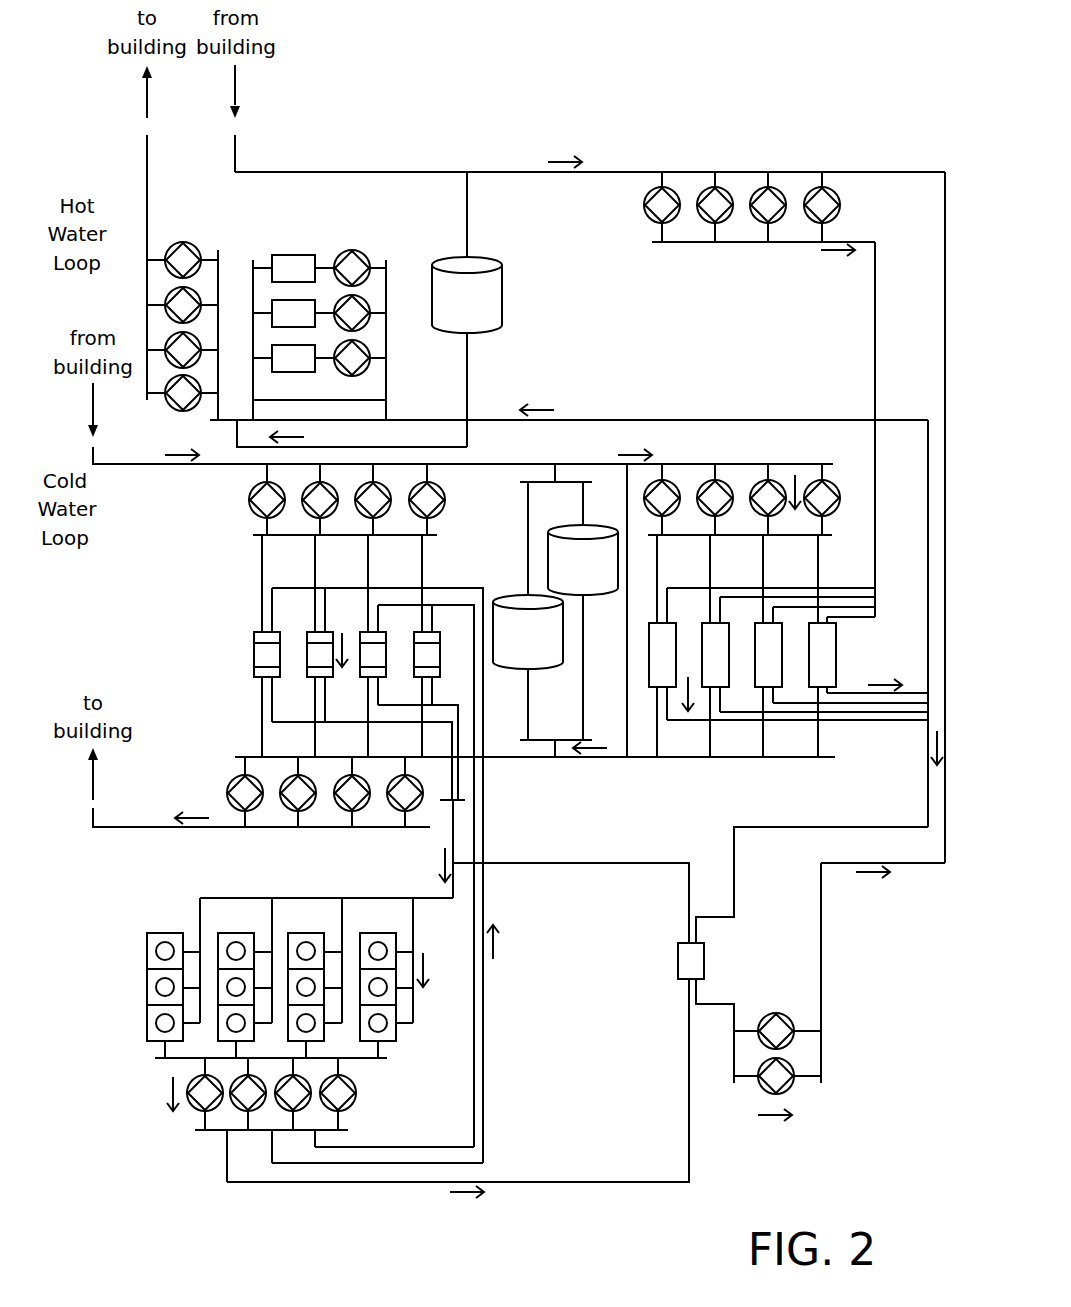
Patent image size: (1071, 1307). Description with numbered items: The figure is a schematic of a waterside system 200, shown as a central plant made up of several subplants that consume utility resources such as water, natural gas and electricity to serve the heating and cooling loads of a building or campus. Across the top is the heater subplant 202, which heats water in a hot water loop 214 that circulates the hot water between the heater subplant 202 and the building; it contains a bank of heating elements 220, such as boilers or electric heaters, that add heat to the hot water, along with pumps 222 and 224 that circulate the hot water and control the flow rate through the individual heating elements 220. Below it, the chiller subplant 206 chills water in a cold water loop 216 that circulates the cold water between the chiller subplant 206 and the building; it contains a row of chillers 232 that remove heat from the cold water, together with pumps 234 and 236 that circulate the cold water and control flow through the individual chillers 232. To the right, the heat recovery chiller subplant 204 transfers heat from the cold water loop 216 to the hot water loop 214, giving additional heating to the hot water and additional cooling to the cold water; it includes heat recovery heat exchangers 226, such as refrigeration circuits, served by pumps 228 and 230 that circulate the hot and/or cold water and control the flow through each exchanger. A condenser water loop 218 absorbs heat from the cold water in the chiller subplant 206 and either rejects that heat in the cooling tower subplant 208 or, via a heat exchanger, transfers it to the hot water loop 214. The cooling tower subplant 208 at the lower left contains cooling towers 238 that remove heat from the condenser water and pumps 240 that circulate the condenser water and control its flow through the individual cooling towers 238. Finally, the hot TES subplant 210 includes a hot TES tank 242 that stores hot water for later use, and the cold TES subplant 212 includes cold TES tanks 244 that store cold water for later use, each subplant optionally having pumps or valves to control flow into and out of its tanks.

The waterside system 200 is at (830, 42).
The heater subplant 202 is at (293, 260).
The heat recovery chiller subplant 204 is at (774, 625).
The chiller subplant 206 is at (257, 813).
The cooling tower subplant 208 is at (265, 1040).
The hot thermal energy storage (TES) subplant 210 is at (521, 288).
The cold thermal energy storage (TES) subplant 212 is at (546, 611).
The hot water loop 214 is at (147, 179).
The cold water loop 216 is at (148, 470).
The condenser water loop 218 is at (670, 1184).
The heating elements 220 is at (282, 255).
The pumps 222 is at (191, 245).
The pumps 224 is at (362, 252).
The heat recovery heat exchangers 226 is at (838, 656).
The pumps 228 is at (838, 482).
The pumps 230 is at (840, 204).
The chillers 232 is at (254, 650).
The pumps 234 is at (228, 787).
The pumps 236 is at (251, 498).
The cooling towers 238 is at (397, 1030).
The pumps 240 is at (355, 1098).
The hot TES tank 242 is at (498, 280).
The cold TES tanks 244 is at (564, 528).